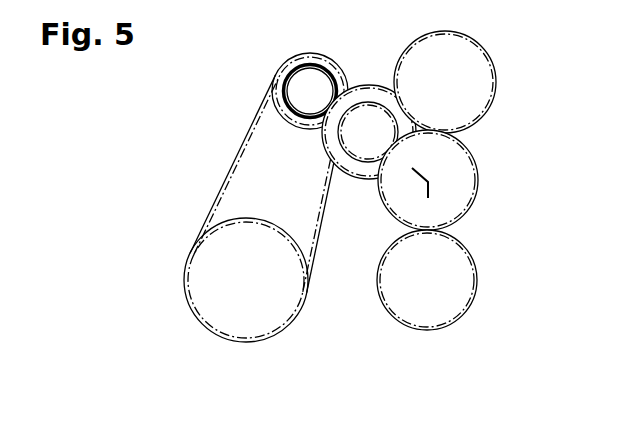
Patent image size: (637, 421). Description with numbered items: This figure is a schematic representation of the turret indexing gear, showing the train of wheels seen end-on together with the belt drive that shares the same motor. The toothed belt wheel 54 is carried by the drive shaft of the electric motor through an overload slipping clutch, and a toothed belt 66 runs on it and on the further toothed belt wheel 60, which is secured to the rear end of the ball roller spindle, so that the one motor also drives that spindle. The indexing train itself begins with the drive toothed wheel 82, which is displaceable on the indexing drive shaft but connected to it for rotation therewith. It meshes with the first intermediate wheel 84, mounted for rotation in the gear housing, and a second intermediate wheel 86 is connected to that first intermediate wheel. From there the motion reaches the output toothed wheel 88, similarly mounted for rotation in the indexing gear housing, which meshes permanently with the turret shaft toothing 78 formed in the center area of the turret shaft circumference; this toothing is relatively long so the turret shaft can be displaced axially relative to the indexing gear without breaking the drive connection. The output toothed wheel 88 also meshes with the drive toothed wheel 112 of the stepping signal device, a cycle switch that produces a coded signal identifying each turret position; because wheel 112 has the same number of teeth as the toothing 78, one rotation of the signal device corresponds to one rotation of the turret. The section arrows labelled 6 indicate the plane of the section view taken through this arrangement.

The toothed belt wheel 60 is at (198, 268).
The toothed belt 66 is at (233, 163).
The toothed belt wheel 54 is at (325, 60).
The drive toothed wheel 82 is at (287, 92).
The first intermediate wheel 84 is at (330, 150).
The second intermediate wheel 86 is at (372, 150).
The drive toothed wheel 112 is at (480, 82).
The output toothed wheel 88 is at (458, 170).
The turret shaft toothing 78 is at (458, 273).
The section line 6- 6 is at (335, 200).